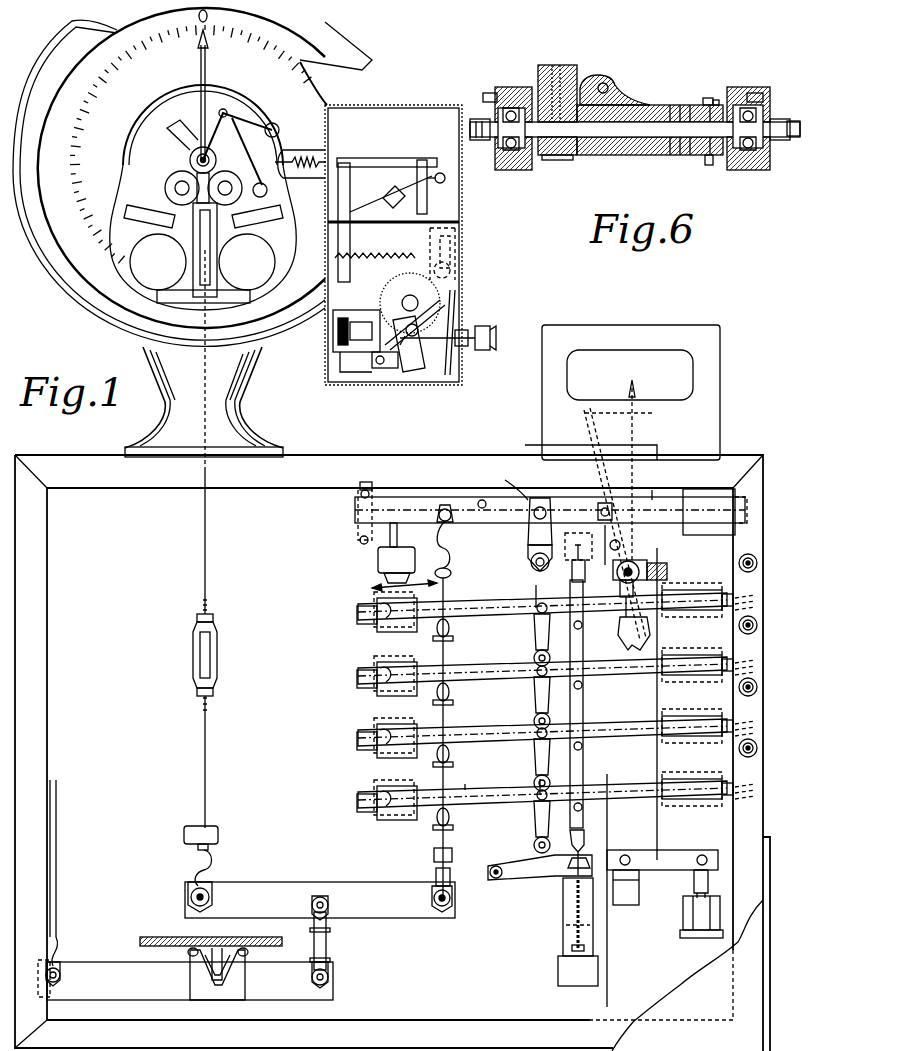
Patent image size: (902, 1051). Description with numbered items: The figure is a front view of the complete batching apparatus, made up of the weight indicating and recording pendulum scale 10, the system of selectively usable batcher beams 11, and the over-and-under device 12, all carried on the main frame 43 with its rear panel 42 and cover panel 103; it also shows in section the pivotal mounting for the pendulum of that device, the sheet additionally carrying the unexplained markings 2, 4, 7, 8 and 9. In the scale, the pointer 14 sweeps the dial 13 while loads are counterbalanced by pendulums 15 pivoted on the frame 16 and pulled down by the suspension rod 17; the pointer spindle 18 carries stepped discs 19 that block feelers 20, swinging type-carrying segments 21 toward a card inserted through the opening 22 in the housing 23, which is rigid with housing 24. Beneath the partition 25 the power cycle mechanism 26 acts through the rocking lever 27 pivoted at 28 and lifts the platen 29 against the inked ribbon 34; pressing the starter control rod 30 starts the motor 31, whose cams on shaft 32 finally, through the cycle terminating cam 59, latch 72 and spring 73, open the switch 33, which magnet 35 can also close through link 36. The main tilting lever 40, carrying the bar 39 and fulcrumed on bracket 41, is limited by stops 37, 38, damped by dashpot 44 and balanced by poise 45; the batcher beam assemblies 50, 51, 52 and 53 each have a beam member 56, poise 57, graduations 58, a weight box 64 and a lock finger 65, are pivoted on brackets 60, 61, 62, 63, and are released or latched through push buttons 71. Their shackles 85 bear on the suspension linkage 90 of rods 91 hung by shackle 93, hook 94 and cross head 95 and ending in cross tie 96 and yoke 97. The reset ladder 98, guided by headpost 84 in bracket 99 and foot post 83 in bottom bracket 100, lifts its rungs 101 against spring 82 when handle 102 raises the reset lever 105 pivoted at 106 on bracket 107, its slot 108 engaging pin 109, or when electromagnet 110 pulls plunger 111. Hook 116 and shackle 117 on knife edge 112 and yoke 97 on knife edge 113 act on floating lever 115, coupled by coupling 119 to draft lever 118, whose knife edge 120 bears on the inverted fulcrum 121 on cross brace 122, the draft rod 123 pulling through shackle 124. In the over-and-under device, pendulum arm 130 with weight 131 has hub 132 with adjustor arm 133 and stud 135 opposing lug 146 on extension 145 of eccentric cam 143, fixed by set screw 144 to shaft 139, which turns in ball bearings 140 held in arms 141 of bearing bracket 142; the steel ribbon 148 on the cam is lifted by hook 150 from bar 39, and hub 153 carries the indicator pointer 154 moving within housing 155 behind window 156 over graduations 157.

In FIG. 1, the weighing system 2 is at (586, 443).
In FIG. 1, the indicating mechanism 4 is at (652, 490).
In FIG. 1, the clevis link 7 is at (540, 493).
In FIG. 1, the lever connection 8 is at (540, 779).
In FIG. 1, the lever connection 9 is at (560, 662).
In FIG. 1, the weight indicating and weight recording pendulum scale 10 is at (288, 346).
In FIG. 1, the system of selectively usable batcher beams 11 is at (418, 935).
In FIG. 1, the over-and-under device 12 is at (560, 774).
In FIG. 1, the dial 13 is at (340, 30).
In FIG. 1, the weight indicating pointer 14 is at (208, 68).
In FIG. 1, the pendulums 15 is at (203, 247).
In FIG. 1, the frame 16 is at (190, 292).
In FIG. 1, the suspension rod 17 is at (210, 300).
In FIG. 1, the pointer spindle 18 is at (194, 160).
In FIG. 1, the stepped discs 19 is at (277, 126).
In FIG. 1, the feelers 20 is at (292, 150).
In FIG. 1, the type-carrying segments 21 is at (405, 208).
In FIG. 1, the opening 22 is at (462, 226).
In FIG. 1, the housing of the recording mechanism 23 is at (462, 260).
In FIG. 1, the housing of the weight counterbalancing mechanism 24 is at (58, 60).
In FIG. 1, the horizontal partition 25 is at (462, 224).
In FIG. 1, the electromechanical power cycle mechanism 26 is at (430, 358).
In FIG. 1, the vertical rocking lever 27 is at (350, 237).
In FIG. 1, the pivot 28 is at (333, 280).
In FIG. 1, the movable platen 29 is at (462, 241).
In FIG. 1, the starter control rod 30 is at (462, 313).
In FIG. 1, the electric motor 31 is at (380, 368).
In FIG. 1, the common shaft 32 is at (440, 303).
In FIG. 1, the switch 33 is at (345, 355).
In FIG. 1, the inked ribbon 34 is at (428, 200).
In FIG. 1, the magnet 35 is at (352, 370).
In FIG. 1, the link 36 is at (400, 345).
In FIG. 1, the upper stop 37 is at (372, 495).
In FIG. 1, the lower stop 38 is at (360, 540).
In FIG. 1, the rearwardly spaced bar 39 is at (480, 500).
In FIG. 1, the main tilting lever 40 is at (550, 516).
In FIG. 1, the stationary bracket 41 is at (512, 480).
In FIG. 1, the rear panel 42 is at (300, 498).
In FIG. 1, the frame 43 is at (70, 480).
In FIG. 1, the dashpot 44 is at (378, 558).
In FIG. 1, the slidable poise 45 is at (715, 512).
In FIG. 1, the batcher beam assembly 50 is at (356, 612).
In FIG. 1, the batcher beam assembly 51 is at (356, 675).
In FIG. 1, the batcher beam assembly 52 is at (356, 737).
In FIG. 1, the batcher beam assembly 53 is at (356, 799).
In FIG. 1, the poise-carrying beam member 56 is at (358, 621).
In FIG. 1, the poise 57 is at (395, 706).
In FIG. 1, the graduations 58 is at (390, 632).
In FIG. 1, the cycle terminating cam 59 is at (468, 338).
In FIG. 1, the bracket 60 is at (530, 626).
In FIG. 1, the bracket 61 is at (532, 690).
In FIG. 1, the bracket 62 is at (532, 752).
In FIG. 1, the bracket 63 is at (534, 812).
In FIG. 1, the weight box 64 is at (720, 594).
In FIG. 1, the lock finger 65 is at (733, 600).
In FIG. 1, the push button 71 is at (757, 563).
In FIG. 1, the latch 72 is at (420, 335).
In FIG. 1, the spring 73 is at (409, 344).
In FIG. 1, the spring 82 is at (562, 932).
In FIG. 1, the foot post 83 is at (568, 880).
In FIG. 1, the headpost 84 is at (571, 570).
In FIG. 1, the shackle 85 is at (452, 645).
In FIG. 1, the suspension linkage 90 is at (393, 581).
In FIG. 1, the threaded vertical rods 91 is at (448, 590).
In FIG. 1, the shackle 93 is at (450, 525).
In FIG. 1, the hook 94 is at (452, 548).
In FIG. 1, the cross head 95 is at (452, 572).
In FIG. 1, the cross tie 96 is at (436, 855).
In FIG. 1, the terminal yoke 97 is at (437, 878).
In FIG. 1, the reset ladder 98 is at (584, 707).
In FIG. 1, the bracket 99 is at (578, 546).
In FIG. 1, the bottom bracket 100 is at (562, 905).
In FIG. 1, the rungs 101 is at (582, 632).
In FIG. 1, the handle 102 is at (496, 878).
In FIG. 1, the cover panel 103 is at (702, 975).
In FIG. 1, the reset lever 105 is at (665, 859).
In FIG. 1, the pivot 106 is at (626, 860).
In FIG. 1, the bracket 107 is at (627, 887).
In FIG. 1, the elongated slot 108 is at (582, 862).
In FIG. 1, the pin 109 is at (560, 865).
In FIG. 1, the electromagnet 110 is at (700, 918).
In FIG. 1, the core or plunger 111 is at (695, 892).
In FIG. 1, the knife edge 112 is at (190, 897).
In FIG. 1, the knife edge 113 is at (435, 900).
In FIG. 1, the floating lever 115 is at (320, 900).
In FIG. 1, the hook 116 is at (196, 870).
In FIG. 1, the shackle 117 is at (190, 893).
In FIG. 1, the draft lever 118 is at (185, 980).
In FIG. 1, the coupling 119 is at (328, 942).
In FIG. 1, the slidable knife edge 120 is at (220, 985).
In FIG. 1, the inverted fulcrum 121 is at (205, 948).
In FIG. 1, the cross brace 122 is at (145, 940).
In FIG. 1, the draft rod 123 is at (56, 818).
In FIG. 1, the shackle 124 is at (56, 955).
In FIG. 1, the pendulum arm 130 is at (620, 588).
In FIG. 1, the pendulum weight 131 is at (628, 640).
In FIG. 6, the hub 132 is at (655, 107).
In FIG. 6, the adjustor arm 133 is at (633, 92).
In FIG. 6, the adjustor stud 135 is at (605, 78).
In FIG. 6, the shaft 139 is at (672, 137).
In FIG. 6, the ball bearing 140 is at (750, 105).
In FIG. 1, the arms 141 is at (650, 568).
In FIG. 6, the arms 141 is at (752, 87).
In FIG. 1, the yoke shaped bearing bracket 142 is at (668, 576).
In FIG. 1, the eccentric cam 143 is at (618, 572).
In FIG. 6, the eccentric cam 143 is at (552, 72).
In FIG. 6, the headless set screw 144 is at (560, 65).
In FIG. 6, the hub-like extension 145 is at (615, 155).
In FIG. 6, the adjustor lug 146 is at (614, 78).
In FIG. 1, the flexible steel ribbon 148 is at (612, 540).
In FIG. 6, the flexible steel ribbon 148 is at (587, 65).
In FIG. 1, the hook 150 is at (605, 510).
In FIG. 6, the hub 153 is at (715, 105).
In FIG. 1, the over-and-under indicator pointer 154 is at (636, 400).
In FIG. 6, the over-and-under indicator pointer 154 is at (708, 98).
In FIG. 1, the protective housing 155 is at (712, 340).
In FIG. 1, the window 156 is at (642, 350).
In FIG. 1, the over-and-under indicating graduations 157 is at (605, 362).